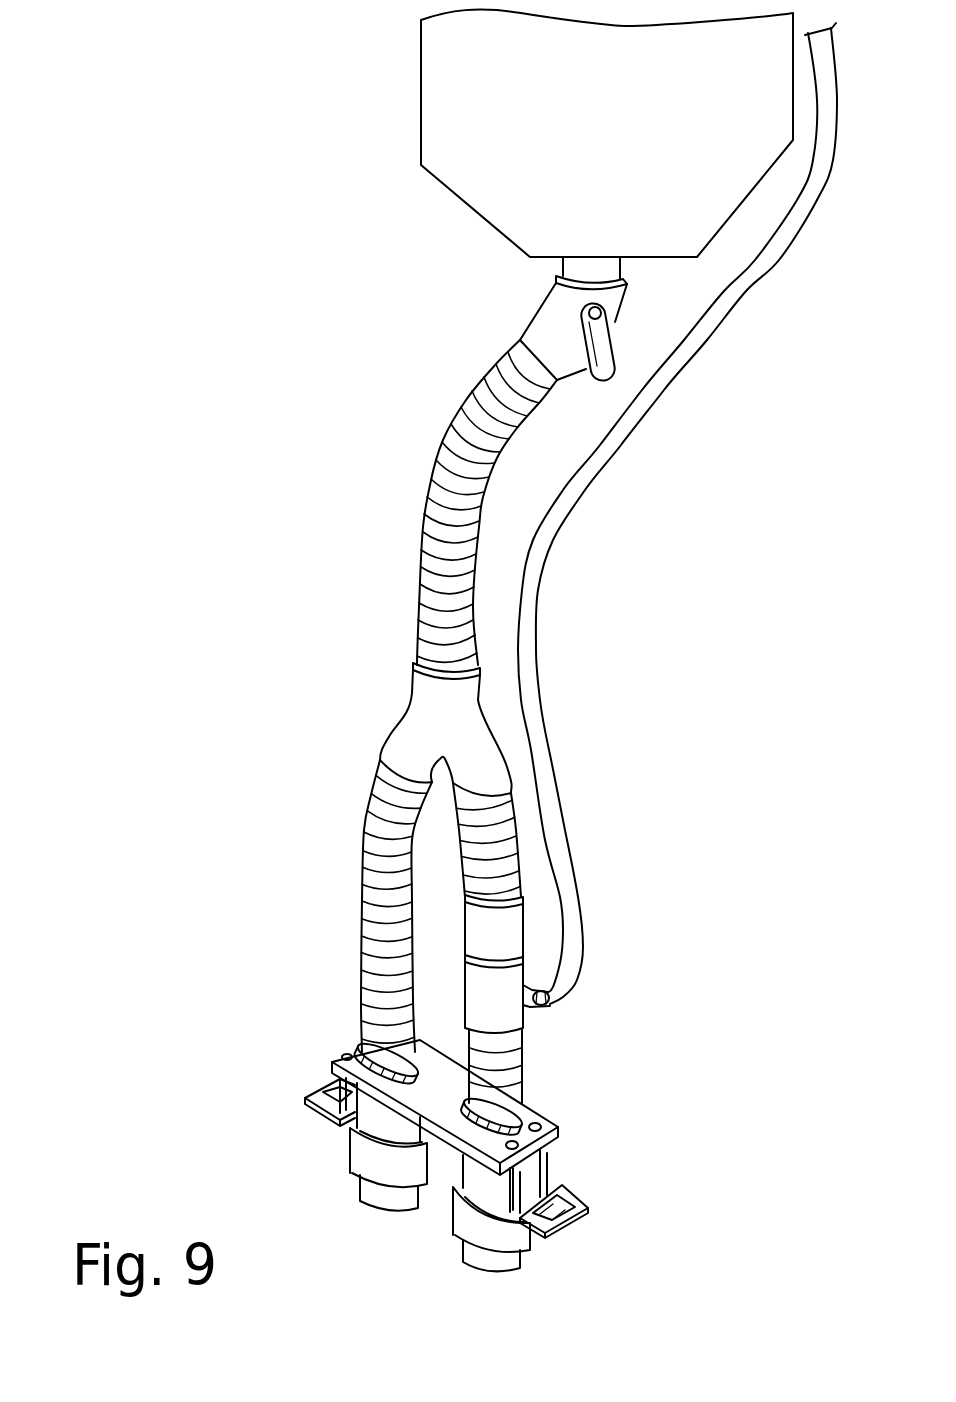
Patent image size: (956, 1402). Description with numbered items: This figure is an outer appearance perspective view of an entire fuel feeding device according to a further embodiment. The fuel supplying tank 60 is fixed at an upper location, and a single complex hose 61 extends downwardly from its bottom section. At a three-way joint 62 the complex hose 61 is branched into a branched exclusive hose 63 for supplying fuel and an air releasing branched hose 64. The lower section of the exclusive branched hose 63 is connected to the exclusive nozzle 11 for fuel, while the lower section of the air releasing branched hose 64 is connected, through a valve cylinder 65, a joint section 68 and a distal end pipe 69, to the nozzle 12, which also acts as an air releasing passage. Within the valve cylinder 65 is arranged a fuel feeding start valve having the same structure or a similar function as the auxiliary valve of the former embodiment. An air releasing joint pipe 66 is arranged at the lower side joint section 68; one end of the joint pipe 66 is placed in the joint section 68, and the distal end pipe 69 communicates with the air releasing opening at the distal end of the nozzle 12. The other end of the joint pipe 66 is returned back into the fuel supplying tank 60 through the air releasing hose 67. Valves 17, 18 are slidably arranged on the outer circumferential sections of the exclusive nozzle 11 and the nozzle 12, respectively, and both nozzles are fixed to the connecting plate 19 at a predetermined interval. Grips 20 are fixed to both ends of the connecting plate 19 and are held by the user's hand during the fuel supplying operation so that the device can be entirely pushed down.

The fuel supplying tank 60 is at (430, 88).
The complex hose 61 is at (458, 428).
The three-way joint 62 is at (407, 732).
The branched exclusive hose for supplying fuel 63 is at (363, 903).
The air releasing branched hose 64 is at (512, 833).
The valve cylinder 65 is at (517, 928).
The air releasing joint pipe 66 is at (521, 1005).
The air releasing hose 67 is at (533, 675).
The joint section 68 is at (470, 1008).
The distal end pipe 69 is at (517, 1087).
The connecting plate 19 is at (347, 1047).
The grips 20 is at (572, 1192).
The valve 17 is at (351, 1155).
The valve 18 is at (460, 1225).
The exclusive nozzle for supplying fuel 11 is at (377, 1193).
The nozzle also acting as an air releasing passage 12 is at (493, 1273).